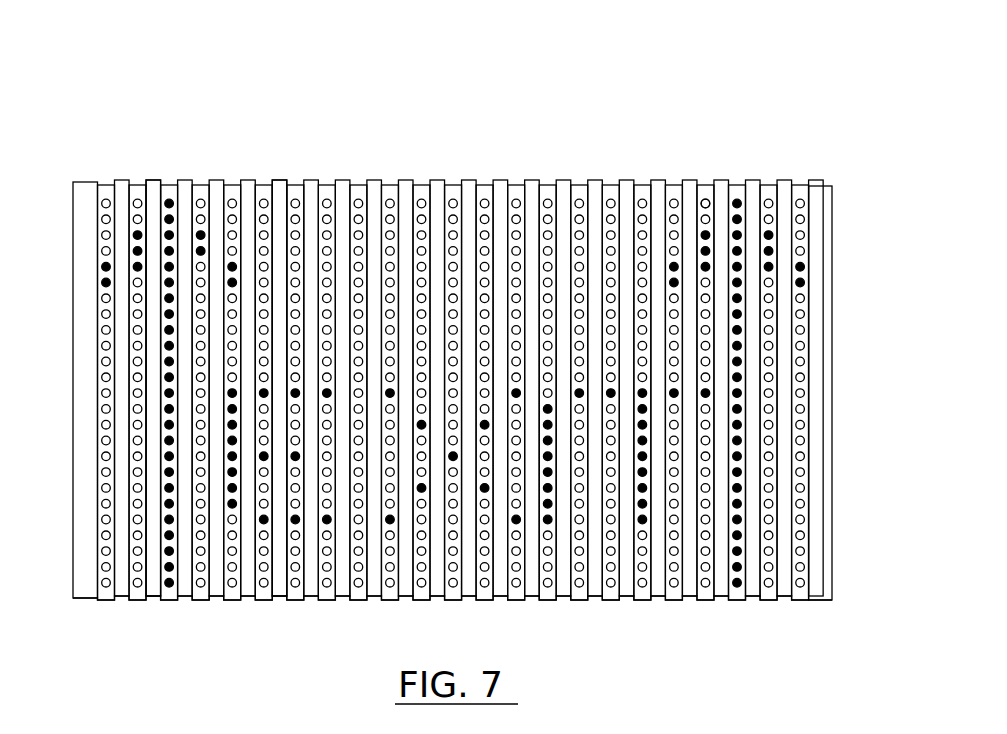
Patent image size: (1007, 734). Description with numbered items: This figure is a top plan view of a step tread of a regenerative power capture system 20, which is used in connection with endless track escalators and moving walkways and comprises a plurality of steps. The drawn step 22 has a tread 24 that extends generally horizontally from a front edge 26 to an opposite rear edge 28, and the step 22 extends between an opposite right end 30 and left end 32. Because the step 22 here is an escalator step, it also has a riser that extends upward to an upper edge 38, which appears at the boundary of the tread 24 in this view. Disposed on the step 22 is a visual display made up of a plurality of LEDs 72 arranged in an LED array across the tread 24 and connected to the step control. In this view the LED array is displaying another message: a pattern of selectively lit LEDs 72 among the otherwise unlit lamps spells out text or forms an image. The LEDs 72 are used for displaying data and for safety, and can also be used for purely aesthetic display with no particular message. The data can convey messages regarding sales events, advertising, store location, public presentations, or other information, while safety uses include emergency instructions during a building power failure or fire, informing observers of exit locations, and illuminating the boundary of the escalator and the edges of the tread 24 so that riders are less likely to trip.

The regenerative power capture system 20 is at (329, 85).
The step 22 is at (149, 182).
The tread 24 is at (278, 193).
The front edge 26 is at (549, 186).
The rear edge 28 is at (818, 588).
The right end 30 is at (832, 316).
The left end 32 is at (85, 381).
The upper edge 38 is at (608, 600).
The LEDs 72 is at (705, 200).